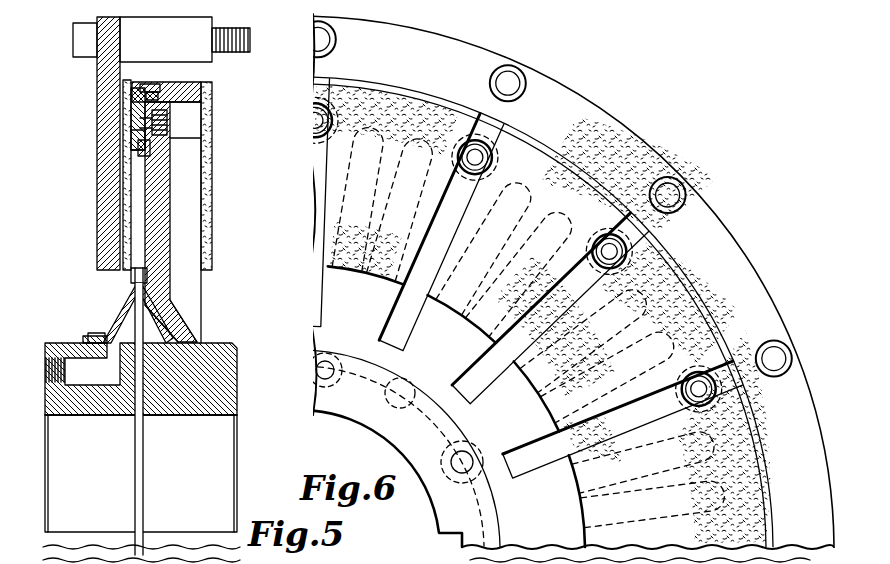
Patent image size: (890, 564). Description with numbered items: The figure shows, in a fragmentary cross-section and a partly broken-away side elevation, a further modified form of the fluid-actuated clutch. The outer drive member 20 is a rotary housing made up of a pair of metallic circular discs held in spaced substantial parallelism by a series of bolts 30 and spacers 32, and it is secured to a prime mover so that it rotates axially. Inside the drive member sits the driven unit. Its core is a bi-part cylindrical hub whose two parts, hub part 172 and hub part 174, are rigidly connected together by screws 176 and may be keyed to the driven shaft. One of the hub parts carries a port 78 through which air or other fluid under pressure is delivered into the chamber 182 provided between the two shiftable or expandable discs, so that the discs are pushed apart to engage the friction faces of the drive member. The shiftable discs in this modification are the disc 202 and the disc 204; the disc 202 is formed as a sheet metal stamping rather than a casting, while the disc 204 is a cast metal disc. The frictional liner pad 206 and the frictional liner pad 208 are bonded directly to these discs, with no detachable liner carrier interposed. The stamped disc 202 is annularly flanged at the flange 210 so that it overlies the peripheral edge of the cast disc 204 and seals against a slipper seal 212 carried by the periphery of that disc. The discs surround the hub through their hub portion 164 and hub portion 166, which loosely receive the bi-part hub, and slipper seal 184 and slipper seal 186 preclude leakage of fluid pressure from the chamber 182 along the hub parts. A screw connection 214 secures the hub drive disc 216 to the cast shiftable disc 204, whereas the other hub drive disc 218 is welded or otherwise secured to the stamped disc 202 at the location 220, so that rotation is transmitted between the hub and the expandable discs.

In FIG. 5, the drive member 20 is at (89, 237).
In FIG. 5, the bolts 30 is at (249, 42).
In FIG. 6, the bolts 30 is at (322, 41).
In FIG. 5, the spacers 32 is at (200, 28).
In FIG. 5, the port 78 is at (48, 367).
In FIG. 5, the hub portion 164 is at (102, 337).
In FIG. 5, the hub portion 166 is at (185, 327).
In FIG. 5, the hub part 172 is at (97, 408).
In FIG. 5, the hub part 174 is at (228, 410).
In FIG. 6, the hub part 174 is at (326, 408).
In FIG. 6, the screws 176 is at (318, 377).
In FIG. 5, the chamber 182 is at (164, 313).
In FIG. 5, the slipper seal 184 is at (79, 342).
In FIG. 5, the slipper seal 186 is at (233, 362).
In FIG. 5, the shiftable disc 202 is at (132, 279).
In FIG. 5, the shiftable disc 204 is at (169, 280).
In FIG. 6, the shiftable disc 204 is at (342, 303).
In FIG. 5, the frictional liner pad 206 is at (127, 201).
In FIG. 5, the frictional liner pad 208 is at (213, 210).
In FIG. 6, the frictional liner pad 208 is at (400, 130).
In FIG. 5, the annular flange 210 is at (147, 83).
In FIG. 5, the slipper seal 212 is at (152, 93).
In FIG. 5, the screw connection 214 is at (153, 125).
In FIG. 6, the screw connection 214 is at (478, 156).
In FIG. 5, the hub drive disc 216 is at (143, 151).
In FIG. 5, the hub drive disc 218 is at (139, 143).
In FIG. 5, the welded location 220 is at (133, 125).